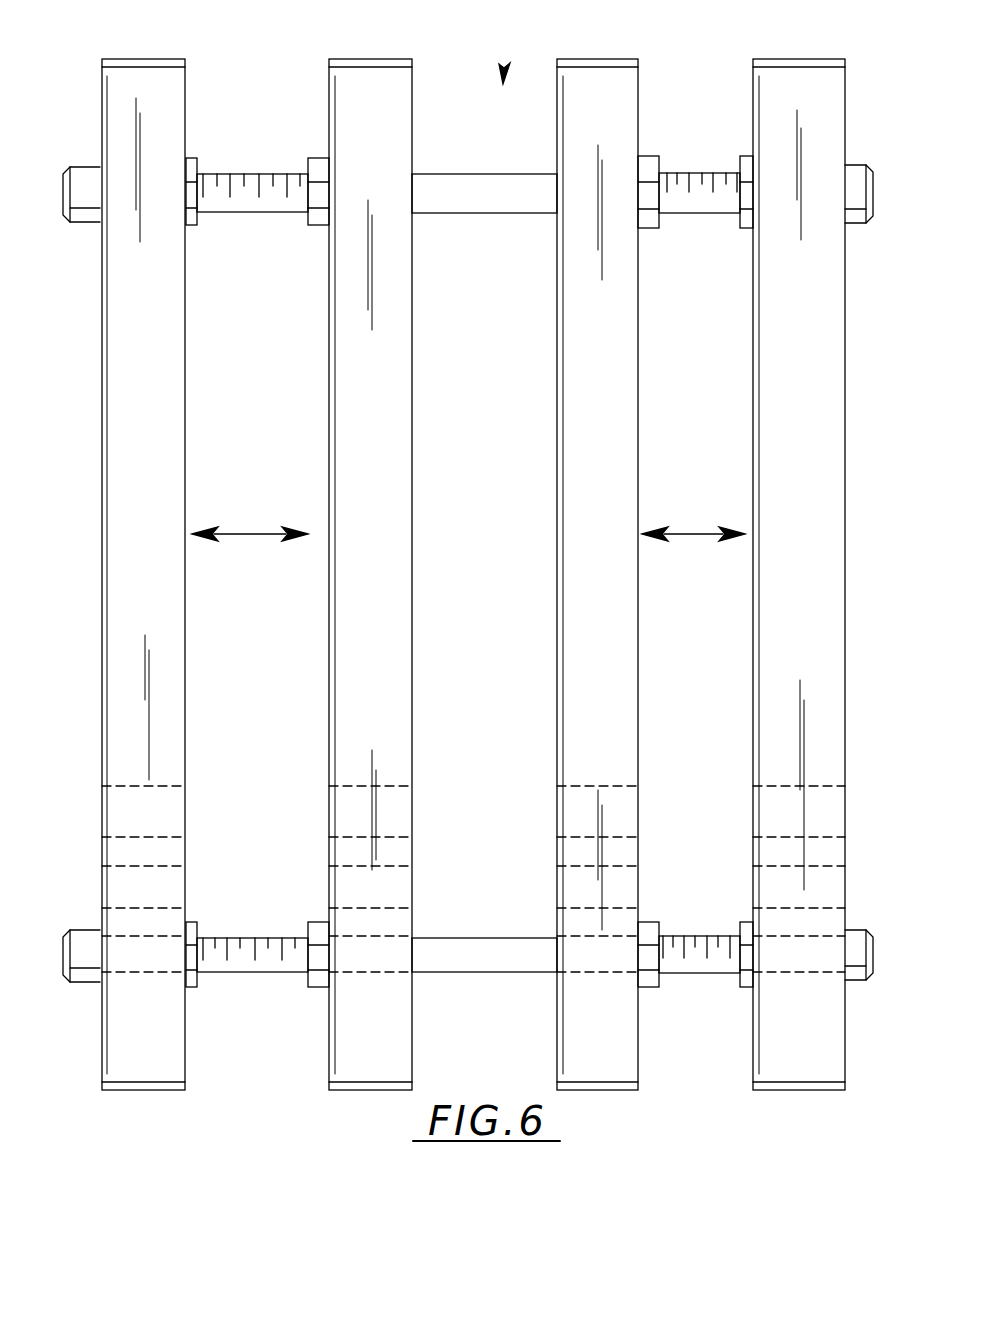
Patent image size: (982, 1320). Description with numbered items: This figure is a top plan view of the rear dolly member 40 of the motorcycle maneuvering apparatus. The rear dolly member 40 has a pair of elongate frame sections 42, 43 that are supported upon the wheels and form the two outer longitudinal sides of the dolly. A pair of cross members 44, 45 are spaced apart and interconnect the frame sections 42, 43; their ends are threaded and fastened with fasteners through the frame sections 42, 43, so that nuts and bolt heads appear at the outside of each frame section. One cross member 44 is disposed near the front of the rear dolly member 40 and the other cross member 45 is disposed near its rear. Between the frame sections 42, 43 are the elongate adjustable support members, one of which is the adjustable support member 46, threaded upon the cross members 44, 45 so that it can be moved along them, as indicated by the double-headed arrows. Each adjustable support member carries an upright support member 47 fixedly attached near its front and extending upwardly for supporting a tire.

The rear dolly member 40 is at (504, 70).
The frame section 42 is at (170, 107).
The frame section 43 is at (771, 275).
The cross member 44 is at (257, 207).
The cross member 45 is at (280, 894).
The elongate adjustable support member 46 is at (385, 152).
The upright support member 47 is at (617, 130).